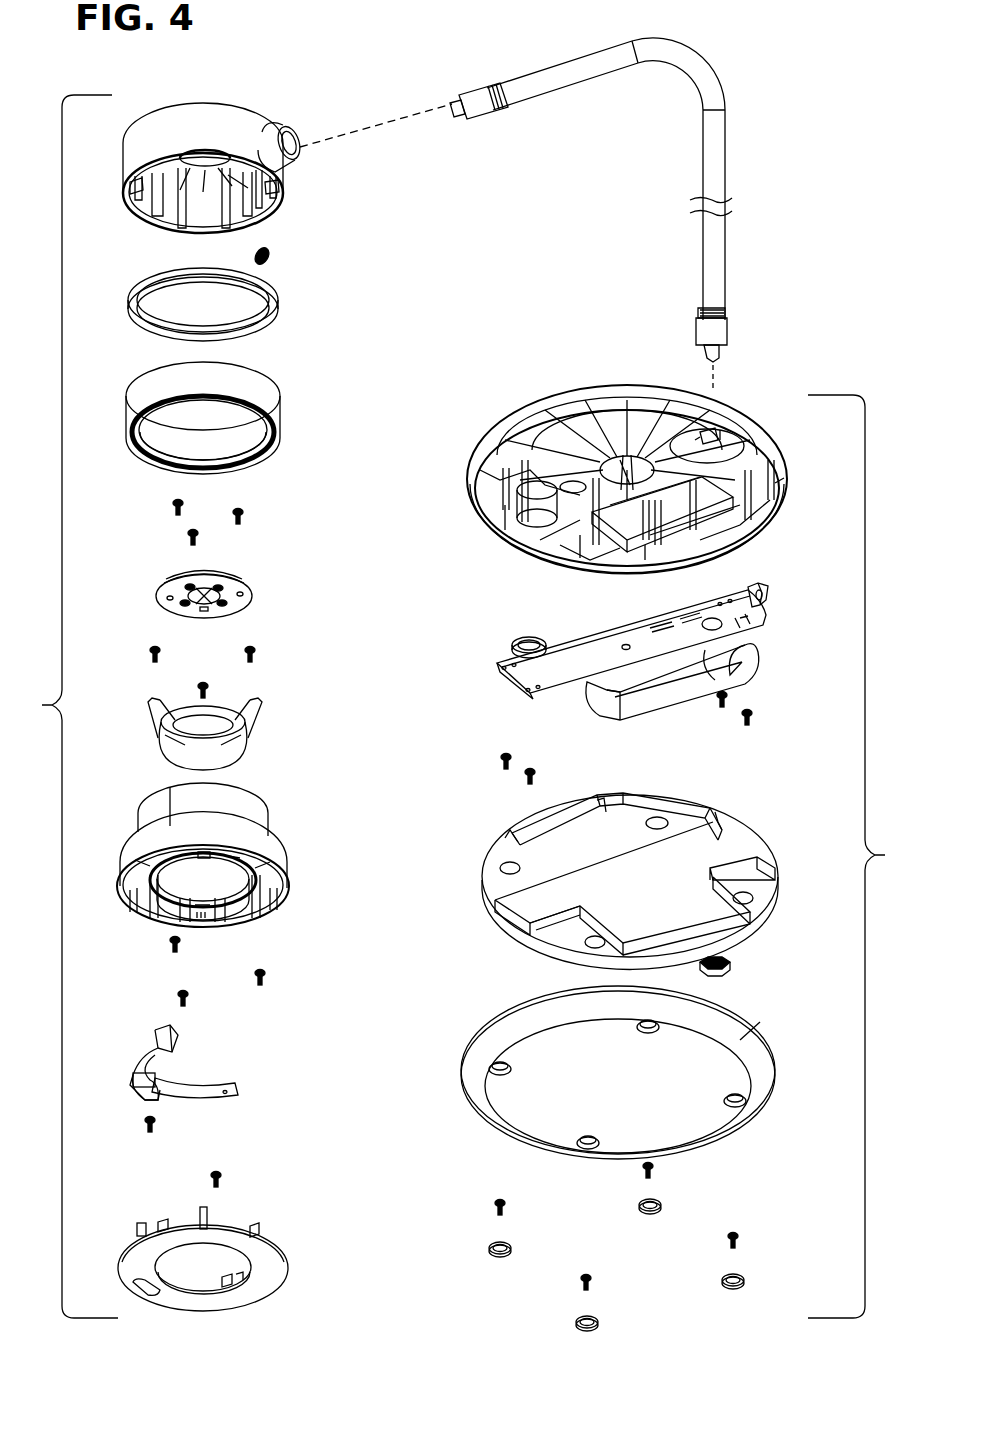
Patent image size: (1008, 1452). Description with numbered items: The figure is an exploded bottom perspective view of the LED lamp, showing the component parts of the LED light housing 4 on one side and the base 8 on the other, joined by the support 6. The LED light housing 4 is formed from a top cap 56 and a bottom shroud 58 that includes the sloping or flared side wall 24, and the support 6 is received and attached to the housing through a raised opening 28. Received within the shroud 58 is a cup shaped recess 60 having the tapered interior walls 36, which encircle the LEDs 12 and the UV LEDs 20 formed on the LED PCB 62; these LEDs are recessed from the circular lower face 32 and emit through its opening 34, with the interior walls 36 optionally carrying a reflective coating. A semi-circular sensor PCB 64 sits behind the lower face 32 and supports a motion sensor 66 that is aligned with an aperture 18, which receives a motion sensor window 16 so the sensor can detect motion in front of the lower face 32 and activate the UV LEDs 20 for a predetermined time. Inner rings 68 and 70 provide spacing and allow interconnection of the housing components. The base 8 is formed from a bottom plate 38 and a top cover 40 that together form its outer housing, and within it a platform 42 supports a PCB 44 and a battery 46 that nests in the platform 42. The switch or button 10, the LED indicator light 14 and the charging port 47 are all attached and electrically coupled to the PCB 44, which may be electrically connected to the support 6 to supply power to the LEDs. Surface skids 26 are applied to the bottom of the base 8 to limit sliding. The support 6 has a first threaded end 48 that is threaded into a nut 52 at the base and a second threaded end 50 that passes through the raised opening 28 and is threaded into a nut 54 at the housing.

The LED light housing 4 is at (67, 706).
The support 6 is at (610, 215).
The base 8 is at (858, 856).
The switch or button 10 is at (525, 640).
The LEDs 12 is at (204, 599).
The LED indicator light 14 is at (639, 660).
The motion sensor window 16 is at (155, 1075).
The aperture 18 is at (148, 1294).
The UV LEDs 20 is at (215, 600).
The flared side wall 24 is at (234, 855).
The surface skids 26 is at (490, 1250).
The raised opening 28 is at (278, 125).
The circular lower face 32 is at (217, 1283).
The opening 34 is at (243, 602).
The tapered interior walls 36 is at (238, 736).
The bottom plate 38 is at (730, 1130).
The top cover 40 is at (780, 460).
The platform 42 is at (752, 853).
The PCB 44 is at (518, 682).
The battery 46 is at (658, 700).
The charging port 47 is at (768, 596).
The first threaded end 48 is at (722, 352).
The second threaded end 50 is at (458, 90).
The nut 52 is at (730, 965).
The nut 54 is at (268, 250).
The top cap 56 is at (162, 112).
The bottom shroud 58 is at (268, 815).
The cup shaped recess 60 is at (258, 728).
The LED PCB 62 is at (225, 577).
The semi-circular sensor PCB 64 is at (138, 1052).
The motion sensor 66 is at (160, 1080).
The inner ring 68 is at (280, 407).
The inner ring 70 is at (275, 305).